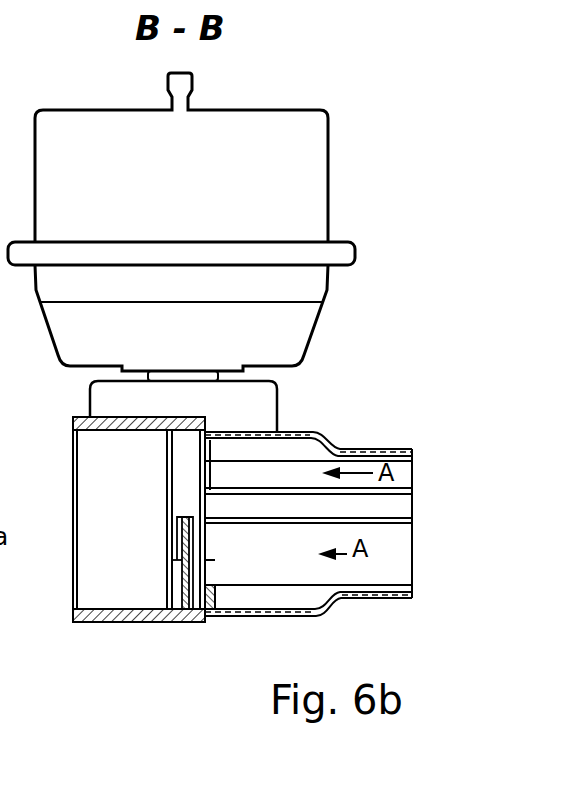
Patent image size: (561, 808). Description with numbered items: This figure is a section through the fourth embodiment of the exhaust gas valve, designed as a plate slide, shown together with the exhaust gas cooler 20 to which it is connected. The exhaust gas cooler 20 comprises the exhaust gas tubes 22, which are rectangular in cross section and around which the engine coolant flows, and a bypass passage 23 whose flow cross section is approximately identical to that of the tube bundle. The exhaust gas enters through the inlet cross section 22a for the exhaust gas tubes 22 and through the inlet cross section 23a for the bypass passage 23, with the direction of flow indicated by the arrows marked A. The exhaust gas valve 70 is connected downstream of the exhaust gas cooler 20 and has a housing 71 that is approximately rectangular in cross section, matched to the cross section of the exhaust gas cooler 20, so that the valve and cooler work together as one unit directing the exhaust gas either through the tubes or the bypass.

The exhaust gas cooler 20 is at (300, 432).
The exhaust gas tubes 22 is at (398, 470).
The inlet cross section for the exhaust gas tubes 22a is at (207, 473).
The bypass passage 23 is at (261, 573).
The inlet cross section for the bypass passage 23a is at (198, 563).
The exhaust gas valve 70 is at (113, 530).
The housing 71 is at (130, 432).